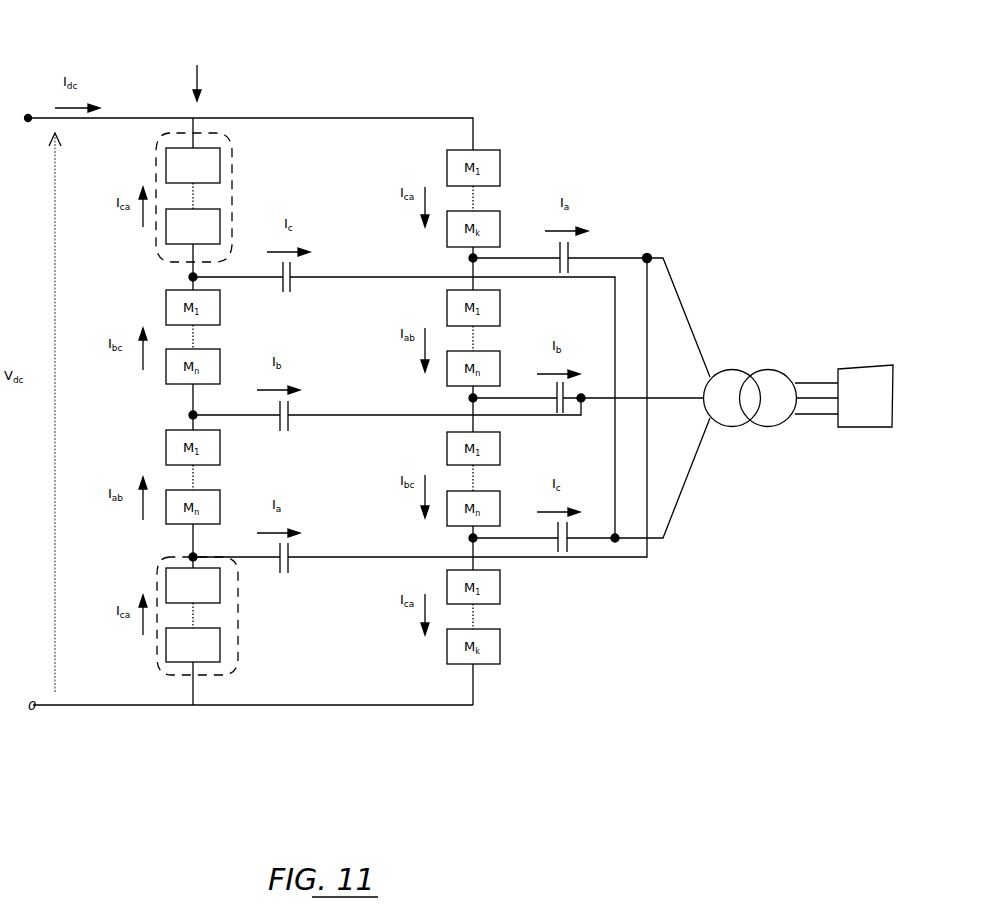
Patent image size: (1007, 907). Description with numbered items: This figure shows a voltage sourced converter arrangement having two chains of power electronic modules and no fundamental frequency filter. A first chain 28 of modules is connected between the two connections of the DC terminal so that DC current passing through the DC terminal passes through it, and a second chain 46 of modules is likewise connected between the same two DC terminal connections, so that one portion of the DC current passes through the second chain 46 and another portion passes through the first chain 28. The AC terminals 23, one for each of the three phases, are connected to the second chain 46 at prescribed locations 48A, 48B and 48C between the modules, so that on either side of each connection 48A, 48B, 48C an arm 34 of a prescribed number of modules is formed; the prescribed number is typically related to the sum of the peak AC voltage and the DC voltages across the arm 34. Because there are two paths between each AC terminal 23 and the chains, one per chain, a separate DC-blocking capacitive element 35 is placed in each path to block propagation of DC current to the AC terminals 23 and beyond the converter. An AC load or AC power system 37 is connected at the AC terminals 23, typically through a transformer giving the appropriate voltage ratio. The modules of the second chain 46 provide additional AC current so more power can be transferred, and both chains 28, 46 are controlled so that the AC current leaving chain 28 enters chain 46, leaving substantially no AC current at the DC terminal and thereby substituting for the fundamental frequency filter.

The second chain 46 is at (202, 69).
The arm 34 is at (232, 149).
The prescribed location 48A is at (176, 276).
The prescribed location 48B is at (176, 415).
The prescribed location 48C is at (176, 556).
The capacitive element 35 is at (308, 300).
The AC terminal 23 is at (652, 232).
The AC power system 37 is at (872, 364).
The chain 28 is at (469, 724).